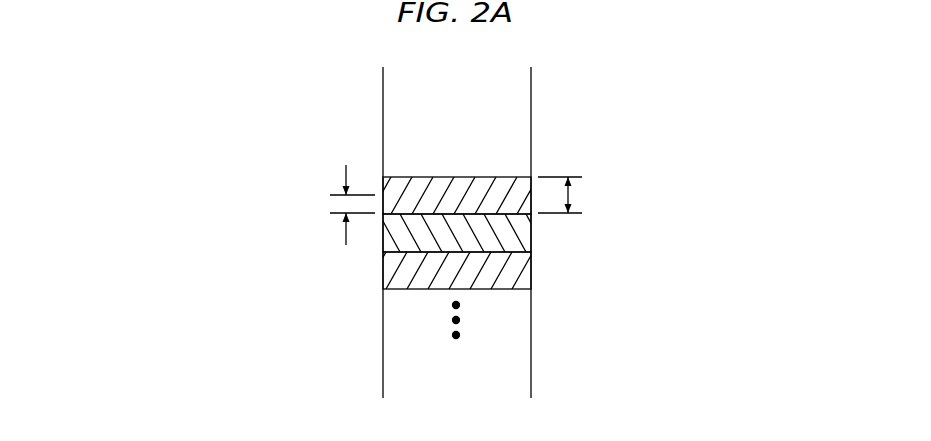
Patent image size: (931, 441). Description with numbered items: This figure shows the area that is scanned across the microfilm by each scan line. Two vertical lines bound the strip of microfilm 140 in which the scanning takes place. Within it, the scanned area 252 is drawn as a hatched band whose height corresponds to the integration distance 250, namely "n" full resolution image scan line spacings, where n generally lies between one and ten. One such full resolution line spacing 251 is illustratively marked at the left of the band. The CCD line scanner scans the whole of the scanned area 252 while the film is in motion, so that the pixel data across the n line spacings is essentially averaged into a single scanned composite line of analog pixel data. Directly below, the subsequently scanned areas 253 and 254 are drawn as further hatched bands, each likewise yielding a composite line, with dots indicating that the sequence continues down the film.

The photoreceptor / scanned medium 140 is at (513, 353).
The integration distance 250 is at (569, 196).
The line spacing 251 is at (343, 207).
The scanned area 252 is at (459, 184).
The scanned area 253 is at (527, 233).
The scanned area 254 is at (522, 266).